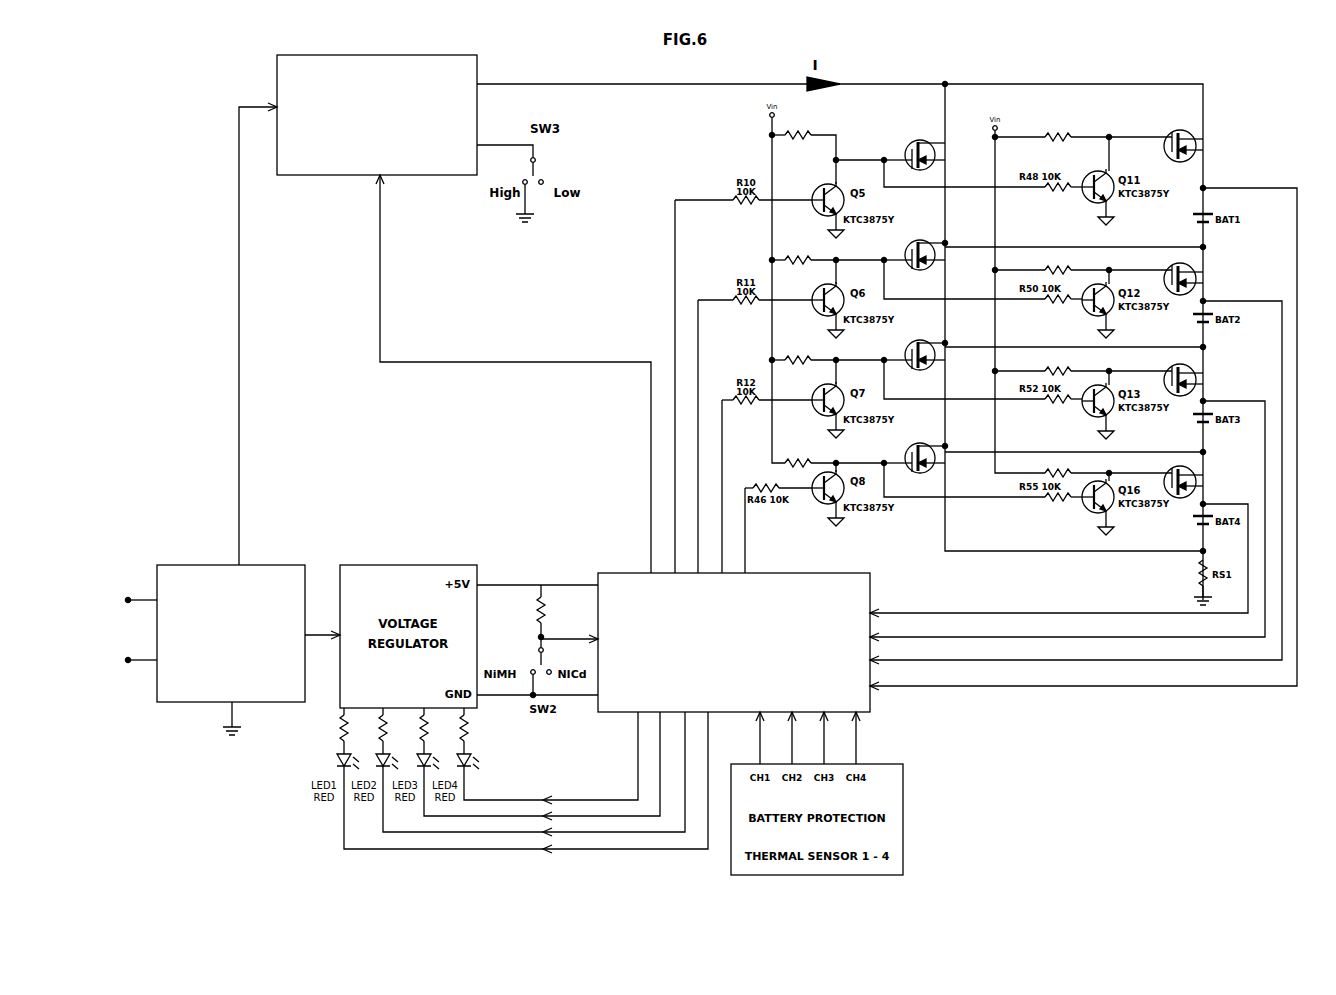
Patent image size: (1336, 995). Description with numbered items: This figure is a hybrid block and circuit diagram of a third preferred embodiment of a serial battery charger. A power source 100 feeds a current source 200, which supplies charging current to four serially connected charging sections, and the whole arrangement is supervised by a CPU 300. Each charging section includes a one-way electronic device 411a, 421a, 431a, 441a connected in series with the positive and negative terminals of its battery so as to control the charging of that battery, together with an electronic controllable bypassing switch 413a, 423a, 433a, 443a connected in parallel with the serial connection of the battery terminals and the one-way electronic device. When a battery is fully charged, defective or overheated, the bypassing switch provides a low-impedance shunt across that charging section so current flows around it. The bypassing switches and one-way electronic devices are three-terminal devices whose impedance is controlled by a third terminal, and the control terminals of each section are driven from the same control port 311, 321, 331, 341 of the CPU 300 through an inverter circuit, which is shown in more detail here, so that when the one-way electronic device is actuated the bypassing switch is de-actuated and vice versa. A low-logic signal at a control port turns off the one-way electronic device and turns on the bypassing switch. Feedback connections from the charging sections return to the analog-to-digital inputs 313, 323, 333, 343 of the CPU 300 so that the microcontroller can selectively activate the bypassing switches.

The power source 100 is at (215, 650).
The current source 200 is at (377, 115).
The CPU 300 is at (734, 642).
The control port 311 is at (675, 402).
The control port 321 is at (698, 452).
The control port 331 is at (722, 502).
The control port 341 is at (745, 546).
The A/D input port of CPU 313 is at (1047, 440).
The A/D input port of CPU 323 is at (1039, 484).
The A/D input port of CPU 333 is at (1031, 522).
The A/D input port of CPU 343 is at (1022, 562).
The one-way electronic device 411a is at (1213, 151).
The one-way electronic device 421a is at (1213, 283).
The one-way electronic device 431a is at (1213, 383).
The one-way electronic device 441a is at (1213, 486).
The bypassing switch 413a is at (907, 120).
The bypassing switch 423a is at (907, 224).
The bypassing switch 433a is at (907, 328).
The bypassing switch 443a is at (907, 430).